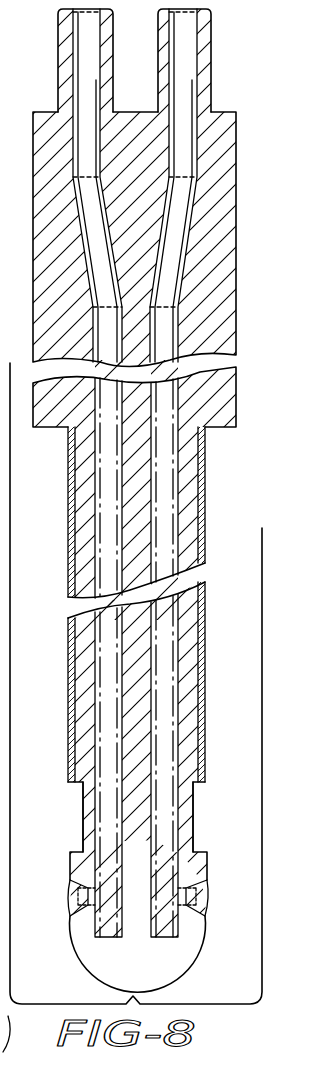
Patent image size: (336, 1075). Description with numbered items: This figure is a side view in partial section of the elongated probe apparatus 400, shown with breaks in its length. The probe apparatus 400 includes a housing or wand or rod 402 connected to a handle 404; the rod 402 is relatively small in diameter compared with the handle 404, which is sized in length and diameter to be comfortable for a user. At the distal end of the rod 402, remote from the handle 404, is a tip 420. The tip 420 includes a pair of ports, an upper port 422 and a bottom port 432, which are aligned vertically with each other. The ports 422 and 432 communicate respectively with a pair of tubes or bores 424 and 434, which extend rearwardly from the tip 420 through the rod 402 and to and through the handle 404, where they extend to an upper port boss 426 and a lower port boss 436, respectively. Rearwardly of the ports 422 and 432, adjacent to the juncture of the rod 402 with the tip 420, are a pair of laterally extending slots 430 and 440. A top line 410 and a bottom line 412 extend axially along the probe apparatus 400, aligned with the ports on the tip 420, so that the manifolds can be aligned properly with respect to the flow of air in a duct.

The probe apparatus 400 is at (50, 558).
The housing or wand or rod 402 is at (205, 582).
The handle 404 is at (237, 135).
The top line 410 is at (205, 495).
The bottom line 412 is at (68, 464).
The tip 420 is at (233, 950).
The upper port 422 is at (205, 887).
The tube or bore 424 is at (186, 626).
The upper port boss 426 is at (232, 40).
The laterally extending slot 430 is at (193, 806).
The bottom port 432 is at (79, 912).
The tube or bore 434 is at (96, 645).
The lower port boss 436 is at (60, 60).
The laterally extending slot 440 is at (84, 808).